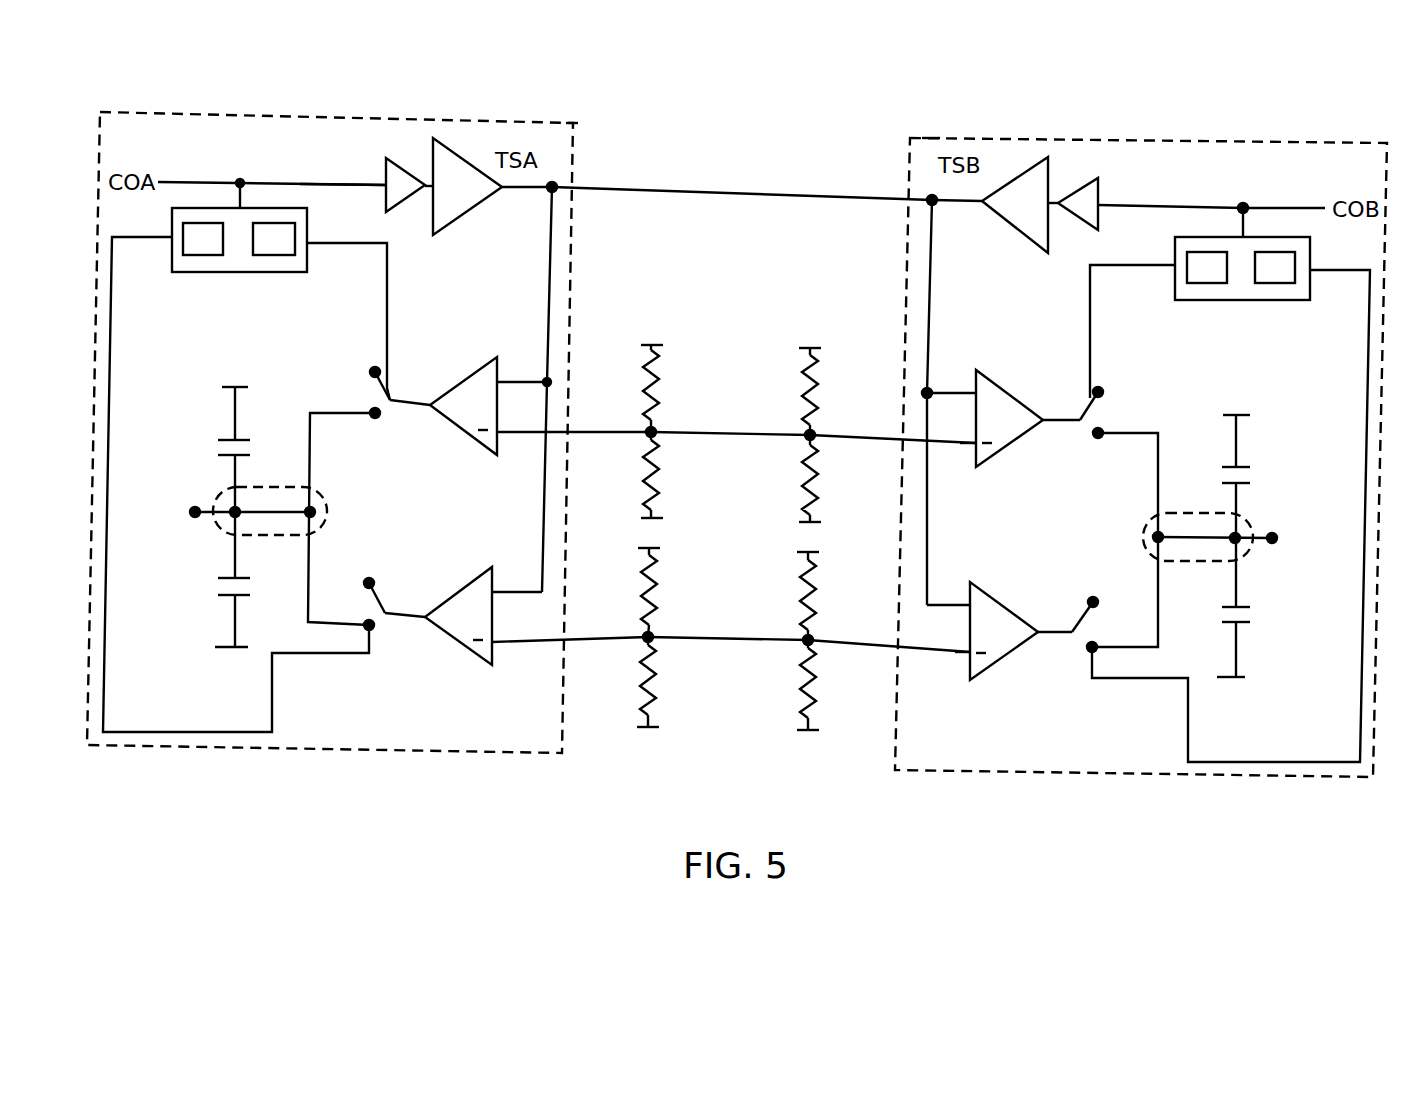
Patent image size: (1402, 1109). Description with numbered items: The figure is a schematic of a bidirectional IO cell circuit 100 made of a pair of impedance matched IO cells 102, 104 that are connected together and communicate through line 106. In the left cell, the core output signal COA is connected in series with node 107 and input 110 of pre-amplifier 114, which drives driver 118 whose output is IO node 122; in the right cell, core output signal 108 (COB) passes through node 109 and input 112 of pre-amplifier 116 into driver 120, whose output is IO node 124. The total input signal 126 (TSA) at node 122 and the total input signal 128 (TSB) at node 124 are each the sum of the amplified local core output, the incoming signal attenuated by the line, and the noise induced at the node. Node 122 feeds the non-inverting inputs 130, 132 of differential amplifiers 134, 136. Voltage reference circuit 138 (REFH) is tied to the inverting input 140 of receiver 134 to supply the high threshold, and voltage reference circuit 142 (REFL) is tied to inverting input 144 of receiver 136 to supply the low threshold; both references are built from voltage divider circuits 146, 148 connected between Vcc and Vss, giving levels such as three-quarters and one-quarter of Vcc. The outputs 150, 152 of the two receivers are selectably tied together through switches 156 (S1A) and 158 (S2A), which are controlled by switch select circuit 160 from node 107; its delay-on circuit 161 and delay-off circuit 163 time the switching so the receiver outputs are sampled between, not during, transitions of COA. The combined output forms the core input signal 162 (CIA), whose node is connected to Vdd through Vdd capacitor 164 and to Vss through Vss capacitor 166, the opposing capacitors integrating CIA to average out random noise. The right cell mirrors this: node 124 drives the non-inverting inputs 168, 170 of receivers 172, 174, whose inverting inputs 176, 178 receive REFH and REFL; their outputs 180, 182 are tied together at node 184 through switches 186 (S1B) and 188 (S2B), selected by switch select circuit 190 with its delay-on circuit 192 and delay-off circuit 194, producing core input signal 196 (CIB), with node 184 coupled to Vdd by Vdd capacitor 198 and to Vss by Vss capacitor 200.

The bidirectional IO cell circuit 100 is at (608, 826).
The IO cell 102 is at (341, 775).
The IO cell 104 is at (1060, 792).
The line 106 is at (135, 158).
The node 107 is at (240, 180).
The core output signal 108 is at (1357, 195).
The node 109 is at (1243, 207).
The input 110 is at (385, 180).
The input 112 is at (1100, 200).
The pre-amplifier 114 is at (405, 165).
The pre-amplifier 116 is at (1085, 190).
The driver 118 is at (467, 160).
The driver 120 is at (1020, 175).
The IO node 122 is at (553, 192).
The IO node 124 is at (930, 198).
The total input signal 126 is at (542, 165).
The total input signal 128 is at (950, 147).
The non-inverting input 130 is at (500, 368).
The non-inverting input 132 is at (495, 585).
The differential amplifier 134 is at (475, 370).
The differential amplifier 136 is at (460, 590).
The voltage reference circuit 138 is at (690, 440).
The inverting input 140 is at (500, 440).
The voltage reference circuit 142 is at (685, 643).
The inverting input 144 is at (495, 645).
The voltage divider circuit 146 is at (665, 378).
The voltage divider circuit 148 is at (652, 683).
The output 150 is at (432, 406).
The output 152 is at (428, 620).
The switch 156 is at (395, 392).
The switch 158 is at (385, 605).
The switch select circuit 160 is at (310, 228).
The delay-on circuit 161 is at (204, 239).
The core input signal 162 is at (168, 495).
The delay-off circuit 163 is at (274, 239).
The Vdd capacitor 164 is at (230, 435).
The Vss capacitor 166 is at (225, 595).
The non-inverting input 168 is at (975, 385).
The non-inverting input 170 is at (970, 595).
The differential amplifier 172 is at (1003, 388).
The differential amplifier 174 is at (1010, 605).
The inverting input 176 is at (975, 455).
The inverting input 178 is at (965, 655).
The output 180 is at (1048, 418).
The output 182 is at (1040, 640).
The node 184 is at (1150, 535).
The switch 186 is at (1093, 436).
The switch 188 is at (1085, 615).
The switch select circuit 190 is at (1172, 278).
The delay-on circuit 192 is at (1207, 267).
The delay-off circuit 194 is at (1275, 267).
The core input signal 196 is at (1303, 525).
The Vdd capacitor 198 is at (1245, 460).
The Vss capacitor 200 is at (1240, 625).